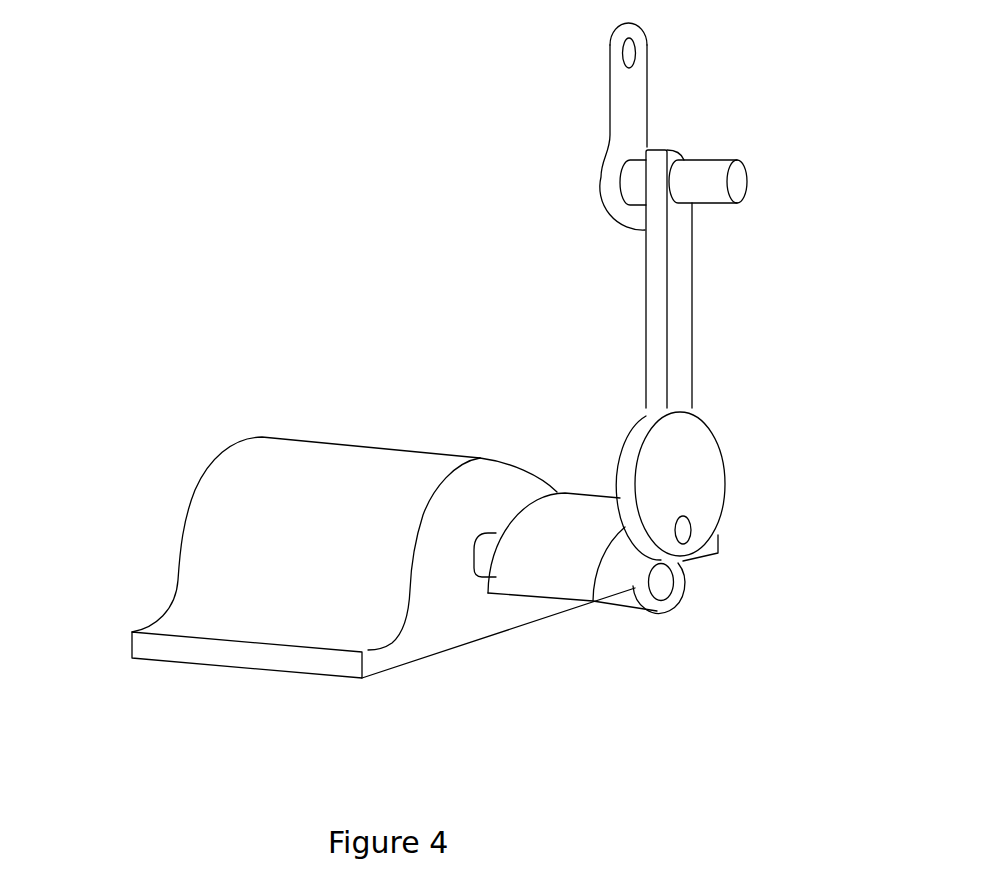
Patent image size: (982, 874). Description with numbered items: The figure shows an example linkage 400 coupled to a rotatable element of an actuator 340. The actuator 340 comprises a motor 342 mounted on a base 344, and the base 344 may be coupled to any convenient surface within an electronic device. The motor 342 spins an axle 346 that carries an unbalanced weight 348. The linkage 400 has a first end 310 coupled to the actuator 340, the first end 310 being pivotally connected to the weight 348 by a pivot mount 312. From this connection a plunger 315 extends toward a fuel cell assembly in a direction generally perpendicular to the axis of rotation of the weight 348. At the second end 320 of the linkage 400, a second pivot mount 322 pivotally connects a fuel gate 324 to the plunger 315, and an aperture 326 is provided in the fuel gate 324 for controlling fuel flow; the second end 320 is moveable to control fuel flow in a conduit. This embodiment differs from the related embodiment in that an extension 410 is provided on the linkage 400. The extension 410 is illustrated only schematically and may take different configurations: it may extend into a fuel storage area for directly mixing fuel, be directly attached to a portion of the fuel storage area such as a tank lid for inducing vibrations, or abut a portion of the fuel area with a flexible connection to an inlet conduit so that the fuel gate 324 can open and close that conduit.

The first end 310 is at (744, 545).
The pivot mount 312 is at (690, 523).
The plunger 315 is at (687, 377).
The second end 320 is at (526, 167).
The second pivot mount 322 is at (623, 190).
The fuel gate 324 is at (608, 96).
The aperture 326 is at (636, 57).
The actuator 340 is at (124, 382).
The motor 342 is at (320, 488).
The base 344 is at (198, 672).
The axle 346 is at (663, 583).
The unbalanced weight 348 is at (572, 500).
The linkage 400 is at (789, 138).
The extension 410 is at (712, 160).